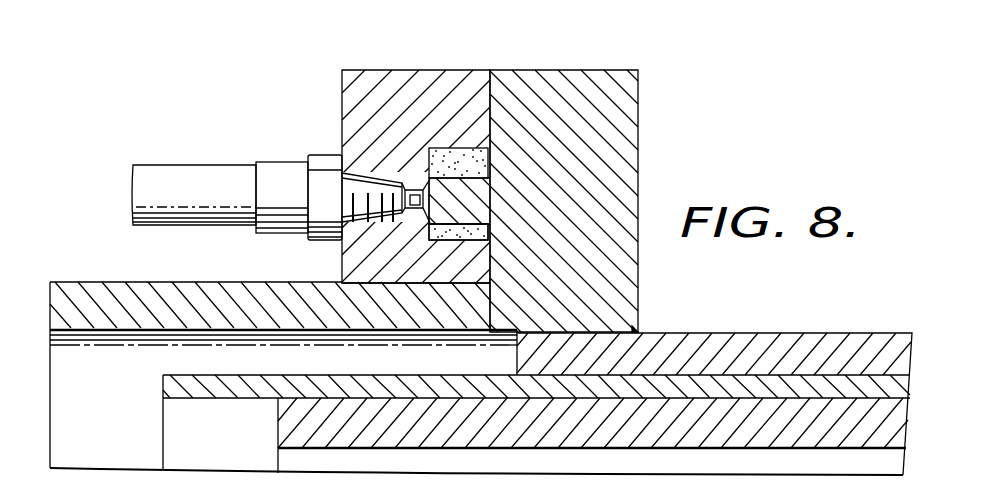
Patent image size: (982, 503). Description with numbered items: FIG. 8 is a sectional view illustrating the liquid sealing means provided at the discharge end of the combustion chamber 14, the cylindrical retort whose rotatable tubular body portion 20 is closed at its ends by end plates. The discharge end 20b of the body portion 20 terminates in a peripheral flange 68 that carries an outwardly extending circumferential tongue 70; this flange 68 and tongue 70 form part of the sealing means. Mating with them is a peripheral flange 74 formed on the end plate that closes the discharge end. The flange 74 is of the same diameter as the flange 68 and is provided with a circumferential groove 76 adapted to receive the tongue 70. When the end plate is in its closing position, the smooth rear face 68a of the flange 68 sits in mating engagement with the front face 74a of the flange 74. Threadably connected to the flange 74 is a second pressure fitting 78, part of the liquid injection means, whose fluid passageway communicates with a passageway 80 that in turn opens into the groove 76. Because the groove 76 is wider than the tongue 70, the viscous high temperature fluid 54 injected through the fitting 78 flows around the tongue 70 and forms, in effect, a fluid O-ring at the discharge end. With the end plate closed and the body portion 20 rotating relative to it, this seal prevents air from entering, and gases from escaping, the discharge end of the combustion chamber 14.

The peripheral flange 74 is at (362, 76).
The circumferential groove 76 is at (443, 150).
The smooth rear face 68a is at (491, 88).
The peripheral flange 68 is at (618, 80).
The circumferential tongue 70 is at (452, 200).
The second pressure fitting 78 is at (270, 168).
The passageway 80 is at (410, 211).
The viscous high temperature fluid 54 is at (440, 232).
The front face 74a is at (490, 272).
The tubular body portion 20 is at (768, 350).
The combustion chamber 14 is at (827, 463).
The discharge end 20b is at (320, 455).